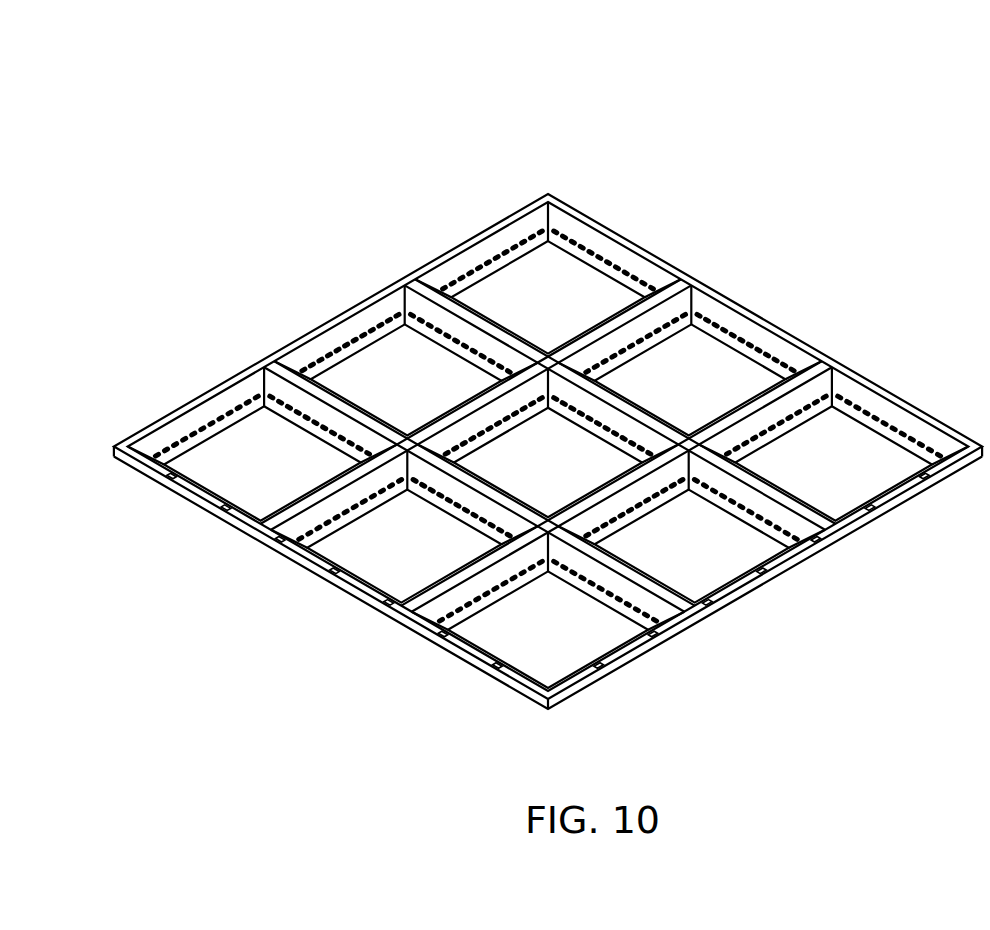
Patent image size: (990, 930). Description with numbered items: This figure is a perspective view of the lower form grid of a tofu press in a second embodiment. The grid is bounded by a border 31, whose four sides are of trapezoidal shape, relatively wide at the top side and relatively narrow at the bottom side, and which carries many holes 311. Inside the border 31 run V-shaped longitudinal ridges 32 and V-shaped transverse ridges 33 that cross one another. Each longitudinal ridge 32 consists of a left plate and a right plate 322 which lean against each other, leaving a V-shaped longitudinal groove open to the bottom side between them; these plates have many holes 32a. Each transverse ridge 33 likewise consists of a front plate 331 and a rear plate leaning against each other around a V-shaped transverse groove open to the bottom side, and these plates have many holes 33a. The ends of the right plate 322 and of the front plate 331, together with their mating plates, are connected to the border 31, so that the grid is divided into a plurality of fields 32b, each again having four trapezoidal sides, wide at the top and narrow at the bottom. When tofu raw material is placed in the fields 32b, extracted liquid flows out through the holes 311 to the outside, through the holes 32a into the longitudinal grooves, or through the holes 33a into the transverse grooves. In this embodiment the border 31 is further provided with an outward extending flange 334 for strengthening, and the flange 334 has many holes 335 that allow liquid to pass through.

The border 31 is at (583, 222).
The holes 311 is at (528, 232).
The V-shaped longitudinal ridges 32 is at (650, 297).
The holes 32a is at (477, 608).
The fields 32b is at (502, 295).
The V-shaped transverse ridges 33 is at (289, 380).
The holes 33a is at (315, 437).
The right plate 322 is at (357, 522).
The front plate 331 is at (297, 428).
The base plate 334 is at (240, 537).
The flange notches 335 is at (440, 632).